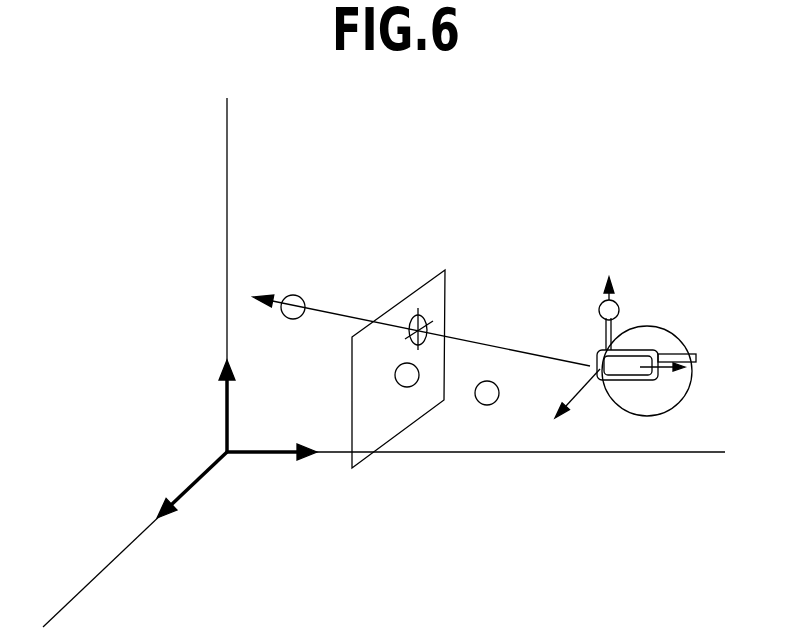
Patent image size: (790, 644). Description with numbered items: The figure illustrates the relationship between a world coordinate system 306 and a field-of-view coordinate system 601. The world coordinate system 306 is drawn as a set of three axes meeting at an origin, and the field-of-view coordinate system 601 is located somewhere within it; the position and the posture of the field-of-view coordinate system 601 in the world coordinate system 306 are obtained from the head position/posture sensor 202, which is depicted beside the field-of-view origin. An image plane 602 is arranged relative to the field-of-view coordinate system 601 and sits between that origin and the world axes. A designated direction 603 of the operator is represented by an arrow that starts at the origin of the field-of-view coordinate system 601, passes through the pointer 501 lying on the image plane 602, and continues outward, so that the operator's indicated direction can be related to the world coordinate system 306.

The world coordinate system 306 is at (205, 468).
The image plane 602 is at (427, 282).
The pointer 501 is at (420, 345).
The designated direction 603 is at (340, 315).
The head position/posture sensor 202 is at (620, 308).
The field-of-view coordinate system 601 is at (575, 398).